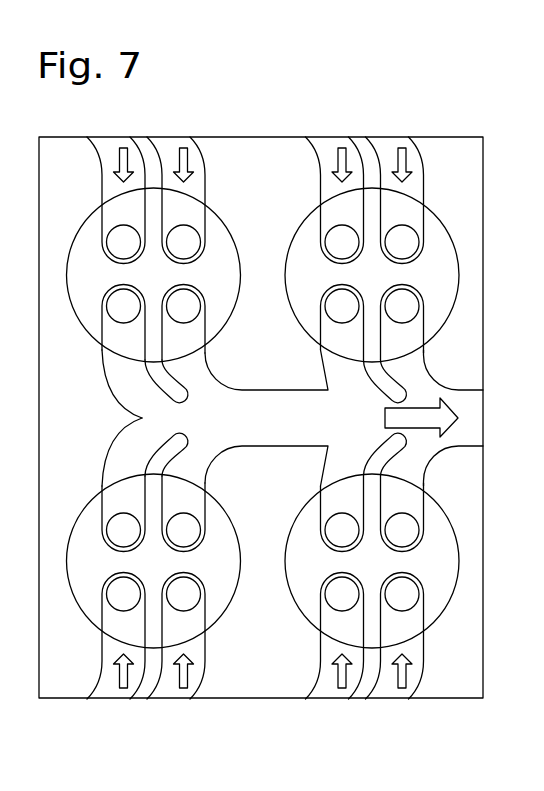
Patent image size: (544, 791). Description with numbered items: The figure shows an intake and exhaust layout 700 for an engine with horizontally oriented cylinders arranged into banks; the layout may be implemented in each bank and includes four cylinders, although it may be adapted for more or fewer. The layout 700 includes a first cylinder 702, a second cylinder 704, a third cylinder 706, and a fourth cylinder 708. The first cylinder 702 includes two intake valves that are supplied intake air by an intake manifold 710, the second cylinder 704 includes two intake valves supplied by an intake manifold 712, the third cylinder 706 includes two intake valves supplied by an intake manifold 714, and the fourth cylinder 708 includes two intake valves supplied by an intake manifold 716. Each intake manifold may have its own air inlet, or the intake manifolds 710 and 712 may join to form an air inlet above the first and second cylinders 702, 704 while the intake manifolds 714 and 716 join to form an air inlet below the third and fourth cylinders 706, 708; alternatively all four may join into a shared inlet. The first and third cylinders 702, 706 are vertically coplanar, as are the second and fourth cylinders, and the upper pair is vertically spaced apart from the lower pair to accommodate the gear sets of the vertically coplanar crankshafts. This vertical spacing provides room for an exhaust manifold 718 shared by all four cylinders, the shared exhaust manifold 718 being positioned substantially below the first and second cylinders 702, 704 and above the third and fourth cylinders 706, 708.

The intake and exhaust layout 700 is at (444, 74).
The first cylinder 702 is at (172, 284).
The second cylinder 704 is at (391, 284).
The third cylinder 706 is at (172, 572).
The fourth cylinder 708 is at (391, 572).
The intake manifold 710 is at (146, 116).
The intake manifold 712 is at (357, 116).
The intake manifold 714 is at (146, 714).
The intake manifold 716 is at (358, 714).
The exhaust manifold 718 is at (294, 427).